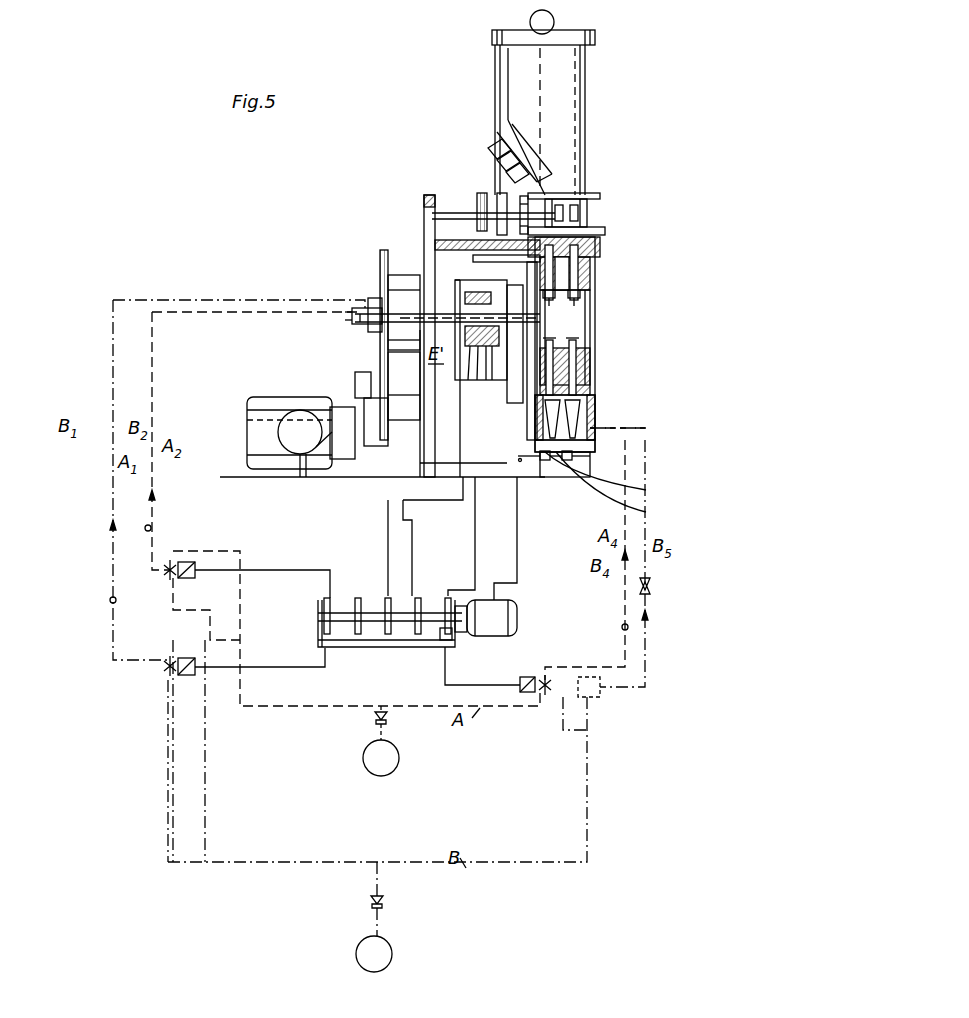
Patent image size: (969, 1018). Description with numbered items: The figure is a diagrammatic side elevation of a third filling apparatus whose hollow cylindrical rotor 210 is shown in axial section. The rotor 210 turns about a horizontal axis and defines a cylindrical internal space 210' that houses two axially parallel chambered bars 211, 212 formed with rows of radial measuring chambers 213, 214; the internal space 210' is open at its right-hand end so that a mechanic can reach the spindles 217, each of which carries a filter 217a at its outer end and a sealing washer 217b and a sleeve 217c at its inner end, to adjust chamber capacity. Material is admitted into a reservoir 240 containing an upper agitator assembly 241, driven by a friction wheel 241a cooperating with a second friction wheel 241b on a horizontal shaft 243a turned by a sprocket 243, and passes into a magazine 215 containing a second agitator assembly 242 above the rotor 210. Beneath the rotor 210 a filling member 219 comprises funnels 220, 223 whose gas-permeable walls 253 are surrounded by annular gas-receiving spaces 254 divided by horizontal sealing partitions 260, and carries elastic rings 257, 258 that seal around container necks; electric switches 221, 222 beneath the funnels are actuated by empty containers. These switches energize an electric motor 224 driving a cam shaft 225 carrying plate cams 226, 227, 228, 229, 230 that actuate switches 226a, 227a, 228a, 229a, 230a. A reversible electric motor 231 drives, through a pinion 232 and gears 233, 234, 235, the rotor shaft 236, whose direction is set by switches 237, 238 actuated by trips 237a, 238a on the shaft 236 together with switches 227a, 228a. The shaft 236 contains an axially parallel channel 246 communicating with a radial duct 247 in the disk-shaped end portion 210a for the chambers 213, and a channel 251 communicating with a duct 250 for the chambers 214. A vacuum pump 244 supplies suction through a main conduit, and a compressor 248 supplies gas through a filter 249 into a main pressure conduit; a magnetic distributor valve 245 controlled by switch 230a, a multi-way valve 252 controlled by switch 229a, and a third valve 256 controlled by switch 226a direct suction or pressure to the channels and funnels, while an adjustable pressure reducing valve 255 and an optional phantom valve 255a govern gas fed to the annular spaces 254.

The reservoir 240 is at (496, 80).
The upper agitator assembly 241 is at (500, 122).
The friction wheel 241a is at (490, 155).
The second friction wheel 241b is at (533, 194).
The magazine 215 is at (566, 195).
The second agitator assembly 242 is at (583, 196).
The measuring chambers 213 is at (585, 231).
The sprocket 243 is at (480, 194).
The horizontal shaft 243a is at (503, 194).
The trip 237a is at (460, 260).
The trip 238a is at (442, 275).
The rotor shaft 236 is at (440, 290).
The axially parallel channel 246 is at (382, 262).
The gear 235 is at (380, 277).
The pinion 232 is at (372, 330).
The axially parallel channel 251 is at (372, 332).
The gear 234 is at (356, 380).
The gear 233 is at (380, 400).
The bar 212 is at (528, 388).
The disk shaped end portion 210a is at (500, 303).
The switch 238 is at (478, 348).
The switch 237 is at (475, 380).
The funnel 223 is at (530, 418).
The funnel walls 253 is at (540, 440).
The radial duct 247 is at (530, 288).
The filter 217a is at (600, 253).
The spindle 217 is at (582, 278).
The bar 211 is at (590, 285).
The sealing washer 217b is at (580, 294).
The sleeve 217c is at (576, 300).
The cylindrical internal space 210' is at (565, 337).
The duct 250 is at (575, 352).
The hollow cylindrical rotor 210 is at (603, 344).
The measuring chambers 214 is at (578, 375).
The filling member 219 is at (590, 410).
The funnel 220 is at (580, 430).
The annular gas-receiving spaces 254 is at (600, 432).
The horizontal sealing partition 260 is at (580, 465).
The electric switch 221 is at (528, 462).
The electric switch 222 is at (566, 465).
The elastic ring 258 is at (615, 476).
The elastic ring 257 is at (621, 487).
The reversible electric motor 231 is at (270, 405).
The multi-way magnetic distributor valve 252 is at (182, 562).
The magnetic distributor valve 245 is at (185, 658).
The plate cam 230 is at (328, 590).
The switch 230a is at (322, 644).
The cam shaft 225 is at (398, 622).
The plate cam 229 is at (353, 634).
The plate cam 228 is at (385, 634).
The plate cam 227 is at (420, 634).
The switch 229a is at (368, 580).
The switch 228a is at (395, 585).
The switch 227a is at (430, 588).
The plate cam 226 is at (462, 632).
The switch 226a is at (450, 642).
The electric motor 224 is at (510, 614).
The third magnetic distributor valve 256 is at (530, 677).
The adjustable pressure reducing valve 255 is at (664, 589).
The valve 255a is at (600, 697).
The vacuum pump 244 is at (386, 765).
The filter 249 is at (385, 902).
The compressor 248 is at (382, 954).